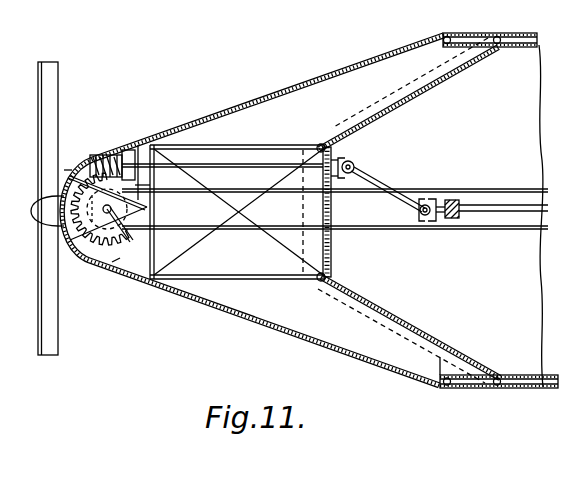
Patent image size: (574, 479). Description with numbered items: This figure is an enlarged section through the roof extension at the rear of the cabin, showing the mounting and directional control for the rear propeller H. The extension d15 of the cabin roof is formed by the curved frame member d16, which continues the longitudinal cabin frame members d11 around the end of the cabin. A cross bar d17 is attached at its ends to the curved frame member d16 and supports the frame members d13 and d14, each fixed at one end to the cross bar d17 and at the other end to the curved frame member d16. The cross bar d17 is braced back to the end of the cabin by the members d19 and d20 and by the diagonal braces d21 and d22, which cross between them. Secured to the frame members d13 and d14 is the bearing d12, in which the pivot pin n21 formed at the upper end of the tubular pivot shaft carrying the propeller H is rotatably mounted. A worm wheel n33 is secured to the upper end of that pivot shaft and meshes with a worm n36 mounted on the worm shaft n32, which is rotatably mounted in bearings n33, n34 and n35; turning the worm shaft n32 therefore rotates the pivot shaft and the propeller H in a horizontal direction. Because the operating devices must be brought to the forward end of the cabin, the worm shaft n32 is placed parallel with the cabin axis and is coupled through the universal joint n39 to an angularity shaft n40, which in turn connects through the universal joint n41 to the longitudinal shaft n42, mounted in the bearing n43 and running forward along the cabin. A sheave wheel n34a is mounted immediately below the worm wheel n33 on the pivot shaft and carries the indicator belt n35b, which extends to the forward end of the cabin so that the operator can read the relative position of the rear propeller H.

The propeller H is at (52, 100).
The longitudinal cabin frame members d11 is at (462, 40).
The bearing d12 is at (98, 252).
The frame member d13 is at (116, 262).
The frame member d14 is at (152, 208).
The extension d15 is at (318, 318).
The curved frame member d16 is at (241, 103).
The cross bar d17 is at (158, 274).
The bracing member d19 is at (250, 264).
The bracing member d20 is at (233, 146).
The diagonal brace d21 is at (202, 194).
The diagonal brace d22 is at (273, 178).
The pivot pin n21 is at (130, 231).
The worm shaft n32 is at (280, 143).
The worm wheel n33 is at (73, 173).
The bearing n34 is at (128, 158).
The sheave wheel n34a is at (112, 262).
The bearing n35 is at (98, 154).
The indicator belt n35b is at (346, 230).
The worm n36 is at (112, 152).
The universal joint n39 is at (354, 163).
The angularity shaft n40 is at (385, 184).
The universal joint n41 is at (426, 198).
The longitudinal shaft n42 is at (518, 212).
The bearing n43 is at (455, 202).